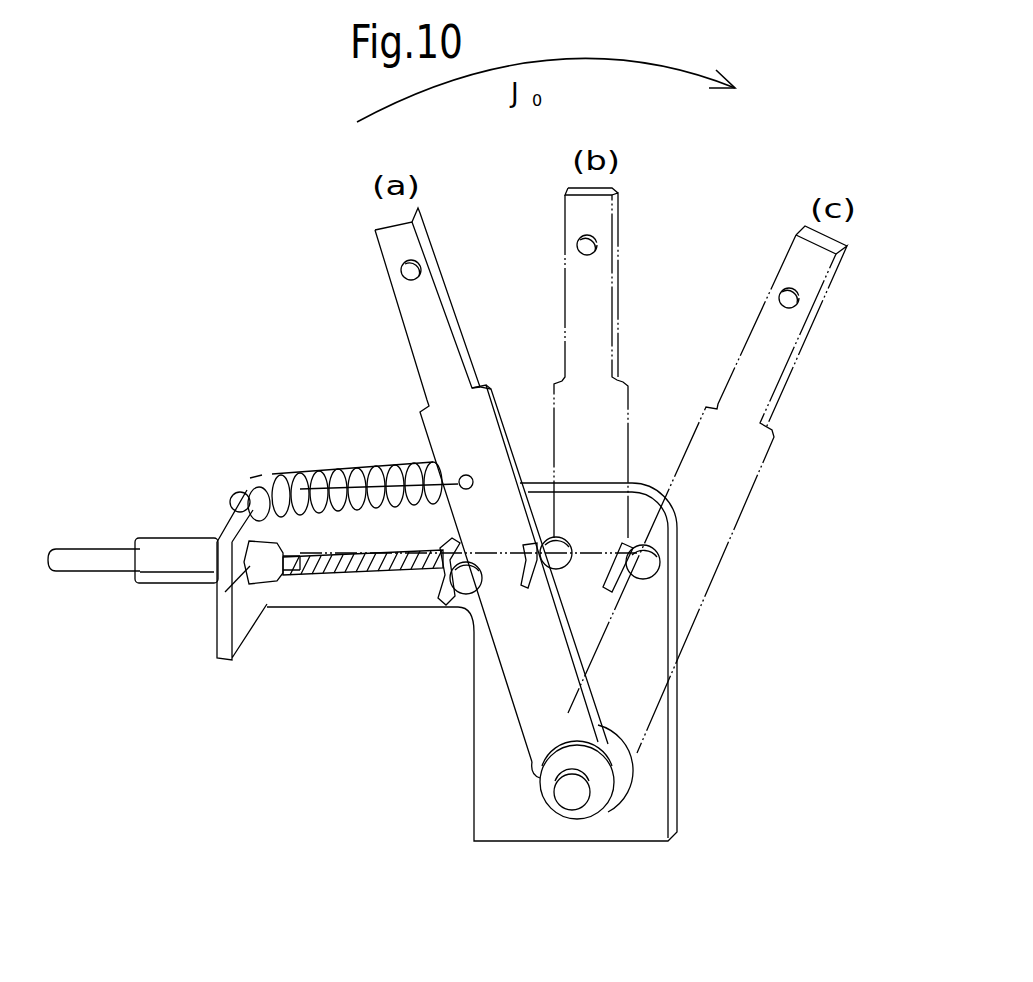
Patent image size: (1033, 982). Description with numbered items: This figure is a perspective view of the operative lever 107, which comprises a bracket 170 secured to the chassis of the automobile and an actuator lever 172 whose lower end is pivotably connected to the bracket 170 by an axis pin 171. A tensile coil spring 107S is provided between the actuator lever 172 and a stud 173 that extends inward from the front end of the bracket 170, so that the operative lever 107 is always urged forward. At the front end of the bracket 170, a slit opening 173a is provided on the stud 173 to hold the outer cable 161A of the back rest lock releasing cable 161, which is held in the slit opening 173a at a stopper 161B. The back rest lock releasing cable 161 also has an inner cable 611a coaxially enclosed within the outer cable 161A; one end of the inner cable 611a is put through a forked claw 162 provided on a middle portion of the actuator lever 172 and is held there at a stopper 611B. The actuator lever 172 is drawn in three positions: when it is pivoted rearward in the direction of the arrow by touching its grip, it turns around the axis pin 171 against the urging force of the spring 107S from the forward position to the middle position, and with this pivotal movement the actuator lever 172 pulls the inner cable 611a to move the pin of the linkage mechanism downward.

The operative lever 107 is at (637, 545).
The tensile coil spring 107S is at (323, 477).
The back rest lock releasing cable 161 is at (78, 598).
The outer cable 161A is at (107, 548).
The stopper 161B is at (252, 498).
The forked claw 162 is at (410, 463).
The bracket 170 is at (655, 810).
The axis pin 171 is at (572, 805).
The actuator lever 172 is at (420, 252).
The stud 173 is at (238, 633).
The slit opening 173a is at (250, 570).
The inner cable 611a is at (368, 578).
The stopper 611B is at (462, 602).